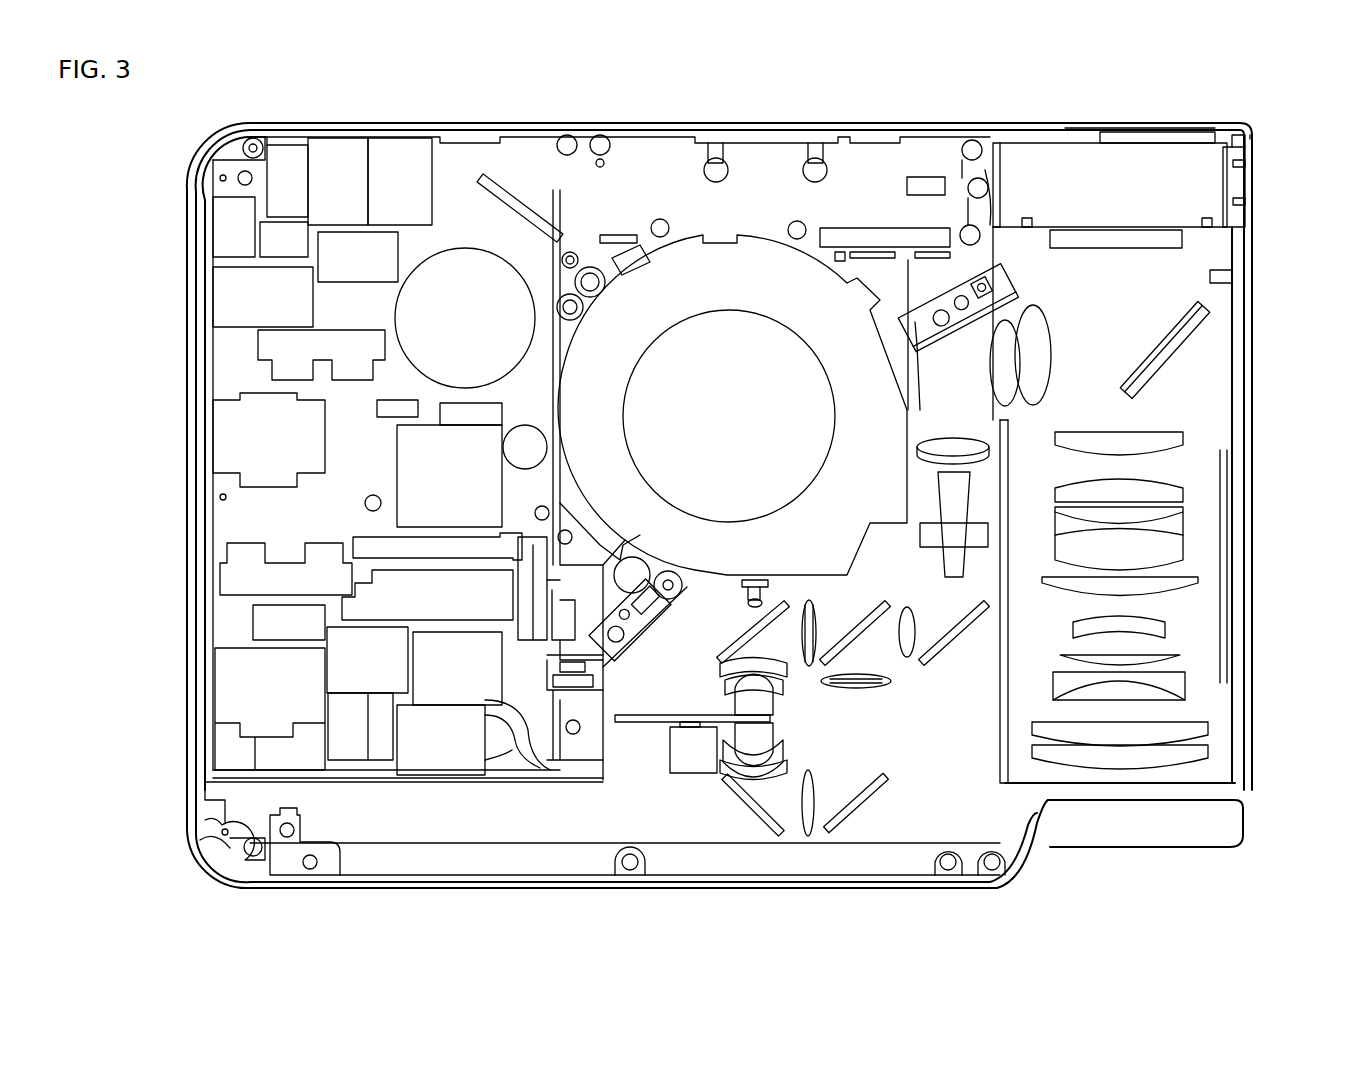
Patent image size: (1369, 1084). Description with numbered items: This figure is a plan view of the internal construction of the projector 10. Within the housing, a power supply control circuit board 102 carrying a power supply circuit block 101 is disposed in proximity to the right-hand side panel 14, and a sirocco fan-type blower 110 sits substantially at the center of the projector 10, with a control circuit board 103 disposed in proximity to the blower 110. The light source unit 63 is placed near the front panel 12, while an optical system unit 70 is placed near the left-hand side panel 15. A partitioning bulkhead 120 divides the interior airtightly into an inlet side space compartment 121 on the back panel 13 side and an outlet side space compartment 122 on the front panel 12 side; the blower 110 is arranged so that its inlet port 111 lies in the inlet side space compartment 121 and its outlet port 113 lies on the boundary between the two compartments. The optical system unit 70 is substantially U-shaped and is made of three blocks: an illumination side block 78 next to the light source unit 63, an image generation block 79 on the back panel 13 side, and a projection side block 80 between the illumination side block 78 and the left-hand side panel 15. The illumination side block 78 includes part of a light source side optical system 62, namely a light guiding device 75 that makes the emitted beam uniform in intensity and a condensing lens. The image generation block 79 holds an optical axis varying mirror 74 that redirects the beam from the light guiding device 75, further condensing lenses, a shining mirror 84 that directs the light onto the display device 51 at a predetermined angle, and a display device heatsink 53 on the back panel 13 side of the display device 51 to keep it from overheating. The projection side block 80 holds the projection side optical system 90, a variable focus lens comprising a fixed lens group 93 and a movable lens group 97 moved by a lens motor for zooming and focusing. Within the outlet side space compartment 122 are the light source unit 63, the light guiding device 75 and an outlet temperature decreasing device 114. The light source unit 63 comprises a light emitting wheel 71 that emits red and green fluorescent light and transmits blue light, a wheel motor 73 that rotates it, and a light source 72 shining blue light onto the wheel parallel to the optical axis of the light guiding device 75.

The projector 10 is at (1258, 128).
The front panel 12 is at (457, 888).
The back panel 13 is at (462, 125).
The right-hand side panel 14 is at (190, 565).
The left-hand side panel 15 is at (1245, 287).
The display device 51 is at (1140, 240).
The display device heatsink 53 is at (1032, 180).
The light source side optical system 62 is at (943, 418).
The light source unit 63 is at (913, 752).
The optical system unit 70 is at (1195, 393).
The light emitting wheel 71 is at (733, 577).
The light source 72 is at (762, 603).
The wheel motor 73 is at (698, 755).
The optical axis varying mirror 74 is at (970, 385).
The light guiding device 75 is at (953, 488).
The illumination side block 78 is at (940, 318).
The image generation block 79 is at (1012, 263).
The projection side block 80 is at (1190, 663).
The shining mirror 84 is at (1180, 345).
The projection side optical system 90 is at (1178, 465).
The fixed lens group 93 is at (1170, 522).
The movable lens group 97 is at (1195, 743).
The power supply circuit block 101 is at (240, 300).
The power supply control circuit board 102 is at (230, 628).
The control circuit board 103 is at (585, 180).
The blower 110 is at (690, 280).
The inlet port 111 is at (748, 350).
The outlet port 113 is at (660, 728).
The outlet temperature decreasing device 114 is at (410, 860).
The partitioning bulkhead 120 is at (268, 783).
The inlet side space compartment 121 is at (650, 178).
The outlet side space compartment 122 is at (360, 813).